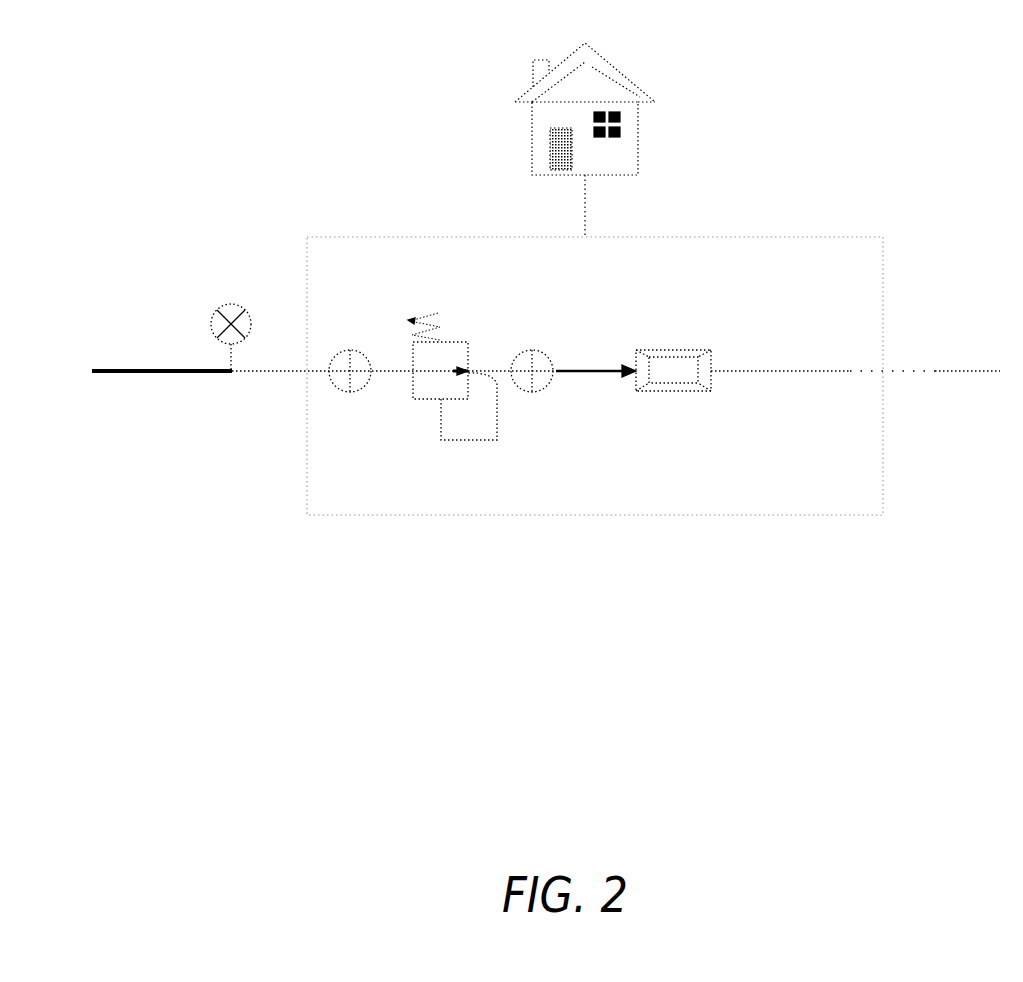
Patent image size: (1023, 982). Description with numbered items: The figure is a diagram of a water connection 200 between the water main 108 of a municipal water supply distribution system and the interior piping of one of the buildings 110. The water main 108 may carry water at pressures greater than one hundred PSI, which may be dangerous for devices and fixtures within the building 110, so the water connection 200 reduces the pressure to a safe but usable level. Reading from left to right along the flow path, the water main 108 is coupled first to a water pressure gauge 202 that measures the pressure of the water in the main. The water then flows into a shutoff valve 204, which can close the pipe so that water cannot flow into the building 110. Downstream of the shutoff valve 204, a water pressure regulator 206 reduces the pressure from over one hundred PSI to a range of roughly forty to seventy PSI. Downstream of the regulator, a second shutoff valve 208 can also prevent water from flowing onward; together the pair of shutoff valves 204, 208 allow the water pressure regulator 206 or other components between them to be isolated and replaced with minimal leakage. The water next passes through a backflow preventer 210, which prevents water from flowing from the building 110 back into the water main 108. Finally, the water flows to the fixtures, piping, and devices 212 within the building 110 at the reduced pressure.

The water connection 200 is at (326, 203).
The building 110 is at (583, 43).
The water main 108 is at (125, 371).
The water pressure gauge 202 is at (231, 304).
The shutoff valve 204 is at (350, 350).
The water pressure regulator 206 is at (413, 342).
The second shutoff valve 208 is at (532, 350).
The backflow preventer 210 is at (673, 350).
The fixtures, piping, and devices 212 is at (973, 371).